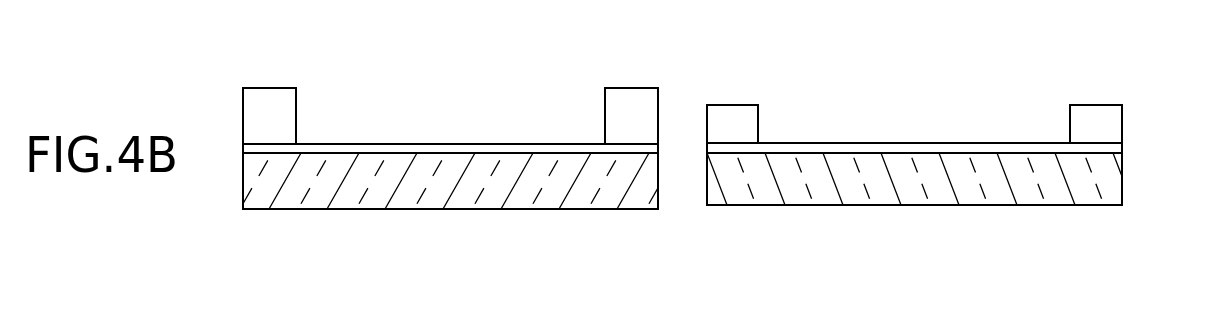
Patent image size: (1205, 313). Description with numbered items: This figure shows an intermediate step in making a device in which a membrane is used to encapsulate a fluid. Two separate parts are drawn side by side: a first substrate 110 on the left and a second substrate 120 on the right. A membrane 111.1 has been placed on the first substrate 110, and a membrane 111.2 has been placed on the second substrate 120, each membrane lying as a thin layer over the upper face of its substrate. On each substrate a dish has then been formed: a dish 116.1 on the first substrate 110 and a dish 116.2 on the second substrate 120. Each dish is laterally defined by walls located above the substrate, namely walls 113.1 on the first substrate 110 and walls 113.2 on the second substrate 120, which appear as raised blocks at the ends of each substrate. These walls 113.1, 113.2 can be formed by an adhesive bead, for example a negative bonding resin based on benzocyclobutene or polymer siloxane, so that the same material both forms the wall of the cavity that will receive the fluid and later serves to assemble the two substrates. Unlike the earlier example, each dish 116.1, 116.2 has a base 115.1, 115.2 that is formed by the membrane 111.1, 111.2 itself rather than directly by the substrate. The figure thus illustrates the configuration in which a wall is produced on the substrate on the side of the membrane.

The first substrate 110 is at (296, 199).
The second substrate 120 is at (1103, 175).
The membrane 111.1 is at (378, 150).
The membrane 111.2 is at (1012, 147).
The wall 113.1 is at (633, 109).
The wall 113.2 is at (733, 117).
The base 115.1 is at (552, 143).
The base 115.2 is at (980, 138).
The dish 116.1 is at (463, 107).
The dish 116.2 is at (896, 104).